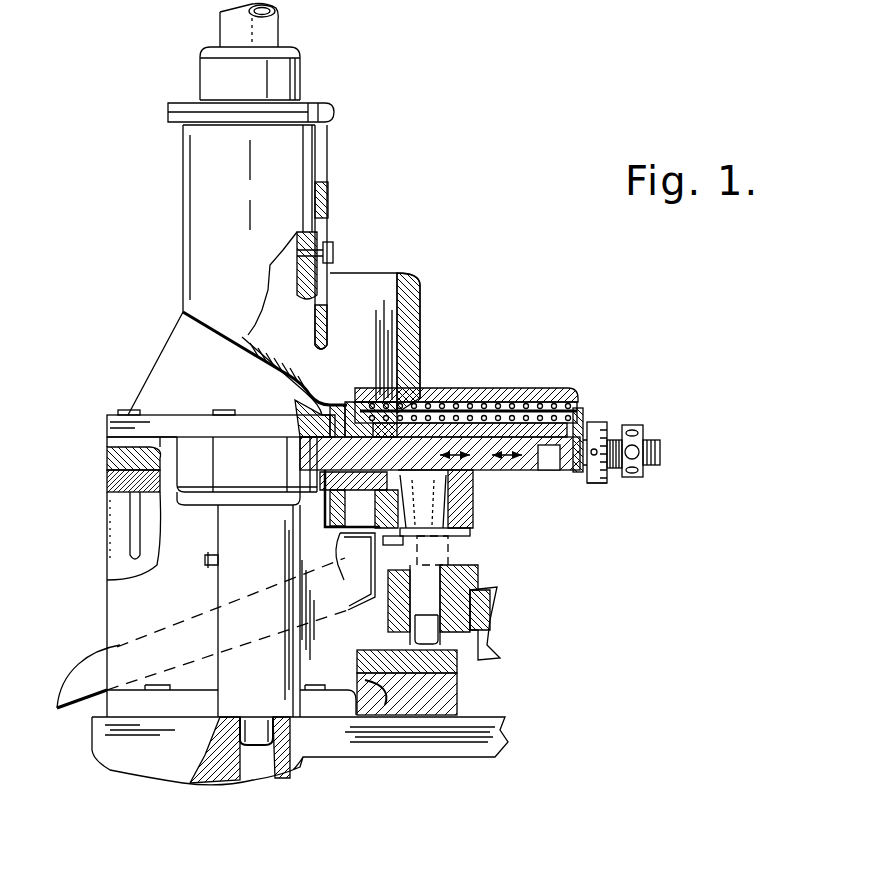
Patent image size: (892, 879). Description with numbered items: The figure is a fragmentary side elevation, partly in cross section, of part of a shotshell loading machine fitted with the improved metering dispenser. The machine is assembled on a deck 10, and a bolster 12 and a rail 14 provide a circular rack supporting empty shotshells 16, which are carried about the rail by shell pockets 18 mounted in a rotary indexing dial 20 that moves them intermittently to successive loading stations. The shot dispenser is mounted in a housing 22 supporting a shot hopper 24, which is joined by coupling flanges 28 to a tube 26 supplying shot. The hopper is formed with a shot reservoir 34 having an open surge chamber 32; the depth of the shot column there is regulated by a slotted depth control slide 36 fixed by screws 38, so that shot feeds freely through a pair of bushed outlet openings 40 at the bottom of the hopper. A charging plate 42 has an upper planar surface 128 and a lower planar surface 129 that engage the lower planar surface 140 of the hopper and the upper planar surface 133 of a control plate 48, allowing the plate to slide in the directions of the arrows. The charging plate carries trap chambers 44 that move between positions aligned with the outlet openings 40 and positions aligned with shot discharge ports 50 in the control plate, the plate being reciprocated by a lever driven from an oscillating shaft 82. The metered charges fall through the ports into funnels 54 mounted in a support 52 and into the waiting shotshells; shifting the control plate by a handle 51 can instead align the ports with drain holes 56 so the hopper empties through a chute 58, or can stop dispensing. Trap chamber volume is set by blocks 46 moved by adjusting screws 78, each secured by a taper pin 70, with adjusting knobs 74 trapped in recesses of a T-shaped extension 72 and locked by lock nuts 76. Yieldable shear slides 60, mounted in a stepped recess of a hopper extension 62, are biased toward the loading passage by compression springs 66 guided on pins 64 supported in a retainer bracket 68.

The deck 10 is at (491, 748).
The bolster 12 is at (458, 697).
The rail 14 is at (458, 669).
The shotshells 16 is at (448, 548).
The shell pockets 18 is at (463, 568).
The rotary indexing dial 20 is at (498, 587).
The housing 22 is at (153, 607).
The shot hopper 24 is at (231, 204).
The tube 26 is at (278, 31).
The coupling flanges 28 is at (334, 111).
The surge chamber 32 is at (380, 272).
The shot reservoir 34 is at (373, 347).
The depth control slide 36 is at (328, 196).
The screws 38 is at (337, 248).
The bushed outlet openings 40 is at (349, 405).
The charging plate 42 is at (525, 475).
The trap chambers 44 is at (317, 450).
The blocks 46 is at (550, 458).
The control plate 48 is at (287, 470).
The shot discharge ports 50 is at (473, 488).
The handle 51 is at (134, 528).
The support 52 is at (473, 508).
The funnels 54 is at (462, 535).
The drain holes 56 is at (340, 519).
The chute 58 is at (86, 655).
The slides 60 is at (409, 413).
The hopper extension 62 is at (507, 393).
The pin 64 is at (554, 398).
The compression spring 66 is at (528, 412).
The retainer bracket 68 is at (581, 412).
The taper pin 70 is at (573, 483).
The T-shaped extension 72 is at (613, 473).
The adjusting knobs 74 is at (600, 488).
The lock nuts 76 is at (643, 432).
The adjusting screw 78 is at (660, 457).
The shaft 82 is at (253, 731).
The upper planar surface 128 is at (158, 415).
The lower planar surface 129 is at (107, 483).
The upper planar surface of control plate 133 is at (107, 457).
The lower planar surface of hopper 140 is at (120, 440).